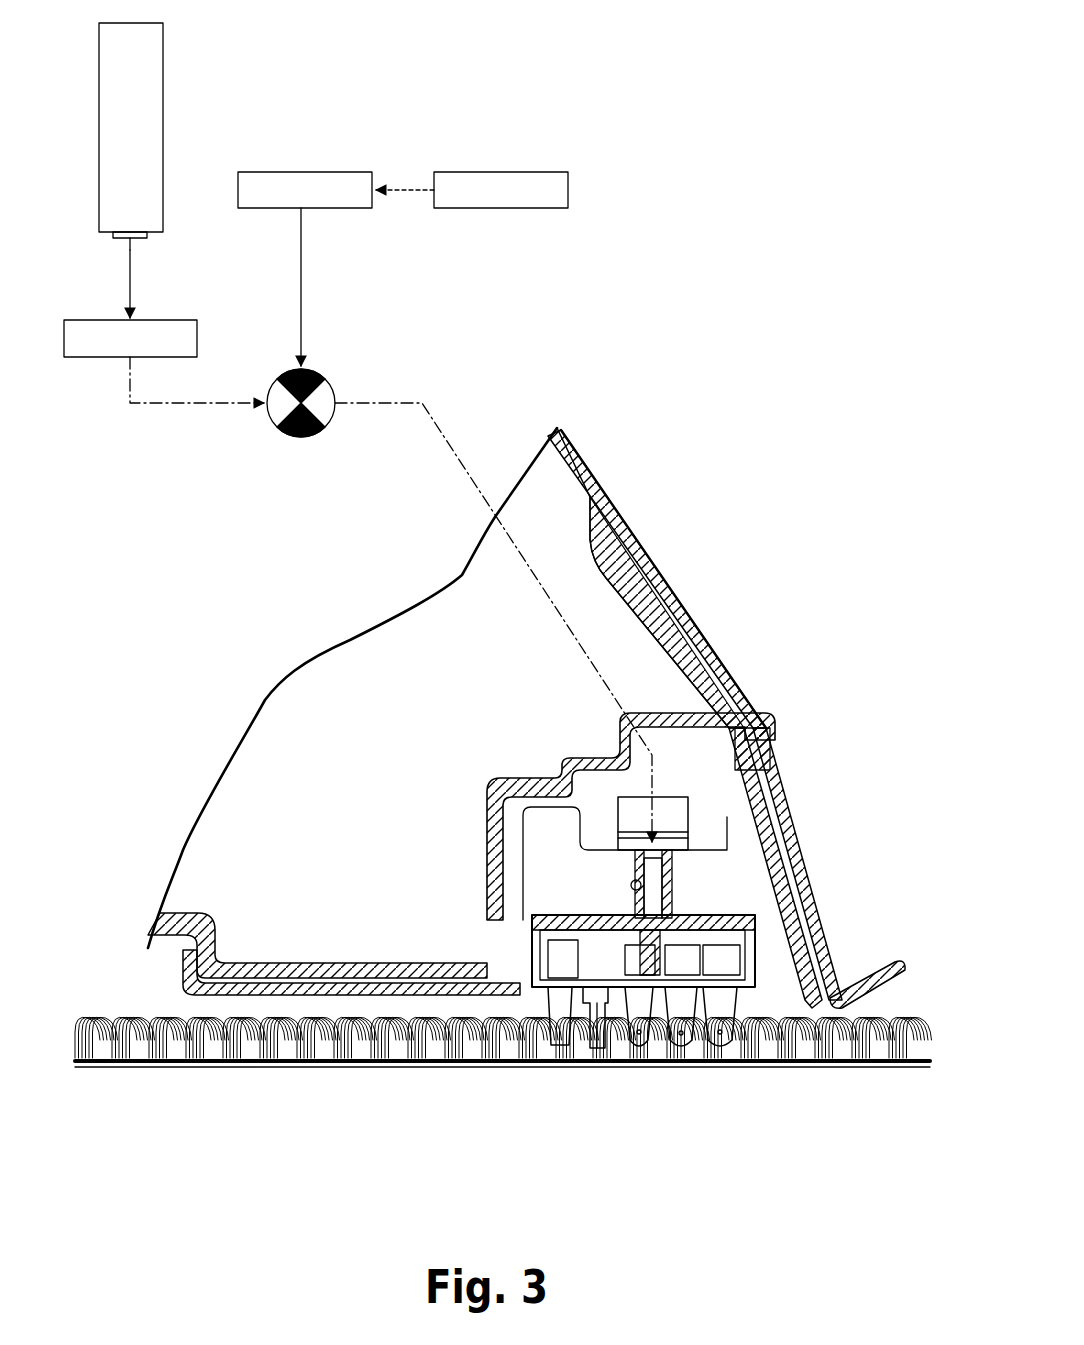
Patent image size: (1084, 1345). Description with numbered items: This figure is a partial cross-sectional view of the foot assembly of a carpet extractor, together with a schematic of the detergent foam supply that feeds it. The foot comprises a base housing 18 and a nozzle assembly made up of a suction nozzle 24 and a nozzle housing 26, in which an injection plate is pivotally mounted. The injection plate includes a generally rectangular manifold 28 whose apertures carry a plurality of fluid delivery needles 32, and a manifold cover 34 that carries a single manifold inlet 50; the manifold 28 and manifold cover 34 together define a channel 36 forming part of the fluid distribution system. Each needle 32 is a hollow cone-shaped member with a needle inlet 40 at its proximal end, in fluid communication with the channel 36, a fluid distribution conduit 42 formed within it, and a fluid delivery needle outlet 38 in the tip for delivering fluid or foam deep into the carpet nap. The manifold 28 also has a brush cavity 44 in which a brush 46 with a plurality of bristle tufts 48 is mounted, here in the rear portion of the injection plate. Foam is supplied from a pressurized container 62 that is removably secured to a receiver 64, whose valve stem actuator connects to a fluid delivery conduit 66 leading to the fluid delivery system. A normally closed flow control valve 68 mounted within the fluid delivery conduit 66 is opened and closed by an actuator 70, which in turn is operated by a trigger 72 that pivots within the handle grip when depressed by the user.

The base housing 18 is at (183, 970).
The suction nozzle 24 is at (785, 820).
The nozzle housing 26 is at (762, 1068).
The manifold 28 is at (718, 917).
The fluid delivery needle 32 is at (680, 1068).
The manifold cover 34 is at (690, 928).
The channel 36 is at (660, 905).
The fluid delivery needle outlet 38 is at (641, 1068).
The needle inlet 40 is at (705, 937).
The fluid distribution conduit 42 is at (624, 1068).
The brush cavity 44 is at (516, 1068).
The brush 46 is at (541, 1068).
The bristle tufts 48 is at (568, 1068).
The manifold inlet 50 is at (690, 800).
The pressurized container 62 is at (172, 134).
The receiver 64 is at (190, 320).
The fluid delivery conduit 66 is at (175, 410).
The flow control valve 68 is at (336, 382).
The actuator 70 is at (322, 172).
The trigger 72 is at (518, 172).